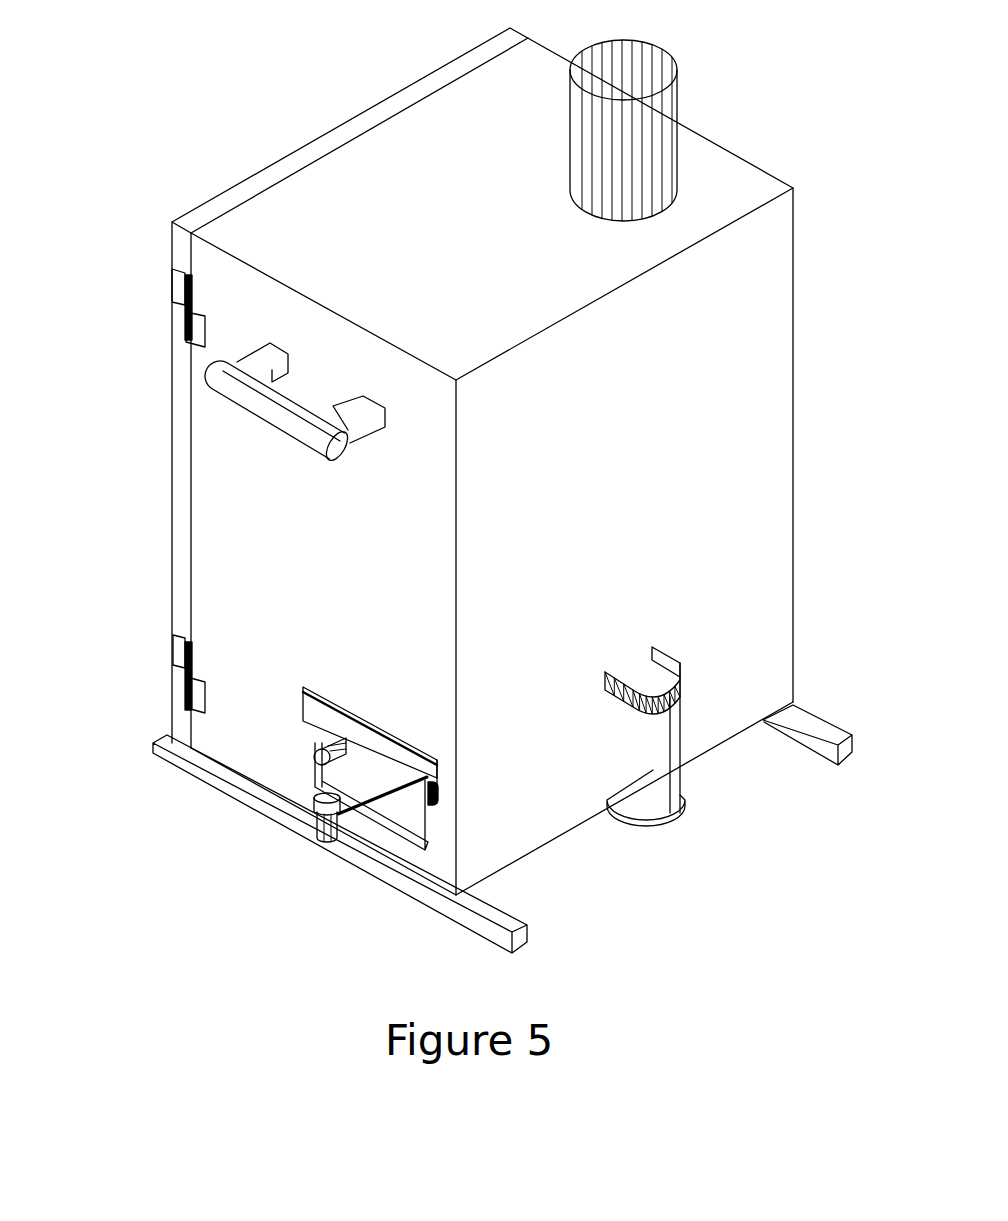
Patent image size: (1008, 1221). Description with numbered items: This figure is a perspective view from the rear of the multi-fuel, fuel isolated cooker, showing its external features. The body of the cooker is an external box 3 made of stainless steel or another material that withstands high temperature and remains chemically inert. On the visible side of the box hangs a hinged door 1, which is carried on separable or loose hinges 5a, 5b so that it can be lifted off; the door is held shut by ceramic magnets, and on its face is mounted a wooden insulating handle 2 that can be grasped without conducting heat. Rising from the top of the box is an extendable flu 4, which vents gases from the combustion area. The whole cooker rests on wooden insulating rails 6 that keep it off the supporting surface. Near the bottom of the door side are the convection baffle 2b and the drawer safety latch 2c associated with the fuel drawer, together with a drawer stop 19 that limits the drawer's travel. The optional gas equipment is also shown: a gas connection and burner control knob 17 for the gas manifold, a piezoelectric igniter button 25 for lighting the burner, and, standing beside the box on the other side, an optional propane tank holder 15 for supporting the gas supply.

The hinged door 1 is at (370, 117).
The wooden insulating handle 2 is at (248, 398).
The convection baffle 2b is at (320, 708).
The drawer safety latch 2c is at (433, 803).
The external box 3 is at (368, 212).
The extendable flu 4 is at (660, 102).
The separable hinge 5a is at (188, 336).
The separable hinge 5b is at (180, 287).
The wooden insulating rail 6 is at (810, 720).
The propane tank holder 15 is at (680, 718).
The gas connection and burner control knob 17 is at (313, 837).
The drawer stop 19 is at (313, 733).
The piezoelectric igniter button 25 is at (322, 760).